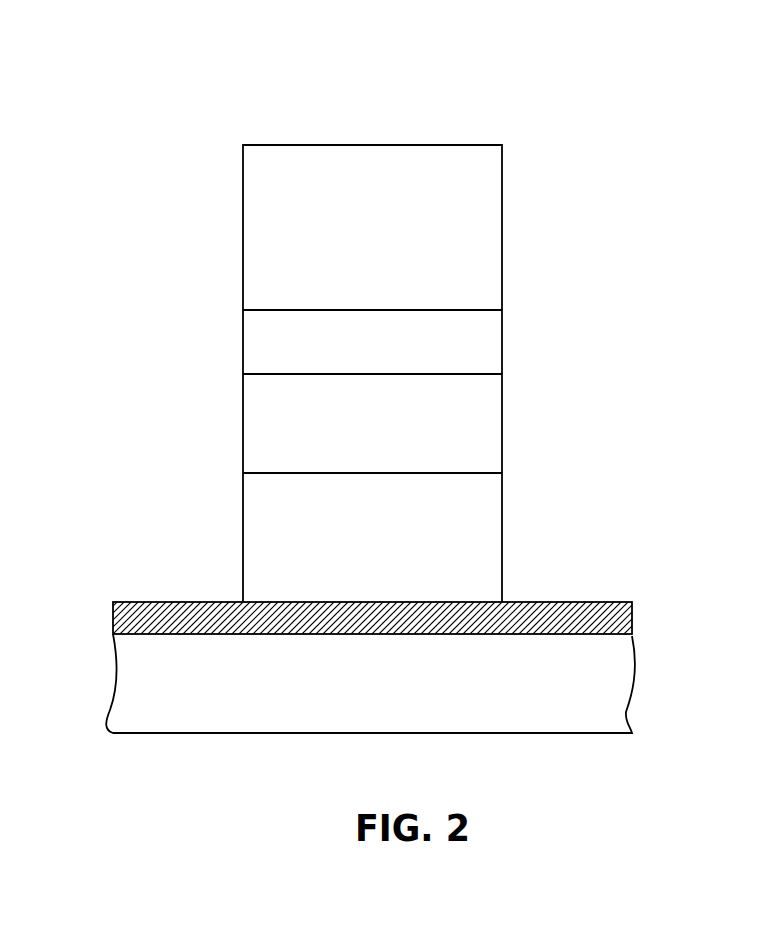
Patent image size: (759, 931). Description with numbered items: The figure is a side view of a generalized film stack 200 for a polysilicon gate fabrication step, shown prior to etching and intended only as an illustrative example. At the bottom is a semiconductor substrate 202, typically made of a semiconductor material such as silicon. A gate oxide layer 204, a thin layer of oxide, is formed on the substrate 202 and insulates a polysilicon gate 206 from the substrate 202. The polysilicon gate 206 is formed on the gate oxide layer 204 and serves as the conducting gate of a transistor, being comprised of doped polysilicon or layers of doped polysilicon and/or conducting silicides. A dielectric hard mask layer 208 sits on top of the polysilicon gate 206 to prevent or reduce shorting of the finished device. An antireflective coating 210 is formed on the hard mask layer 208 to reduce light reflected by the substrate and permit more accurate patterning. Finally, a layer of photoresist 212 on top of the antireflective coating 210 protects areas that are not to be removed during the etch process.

The generalized film stack 200 is at (160, 80).
The semiconductor substrate 202 is at (637, 680).
The gate oxide layer 204 is at (632, 620).
The polysilicon gate 206 is at (502, 536).
The dielectric hard mask layer 208 is at (502, 427).
The antireflective coating 210 is at (502, 341).
The photoresist 212 is at (502, 222).